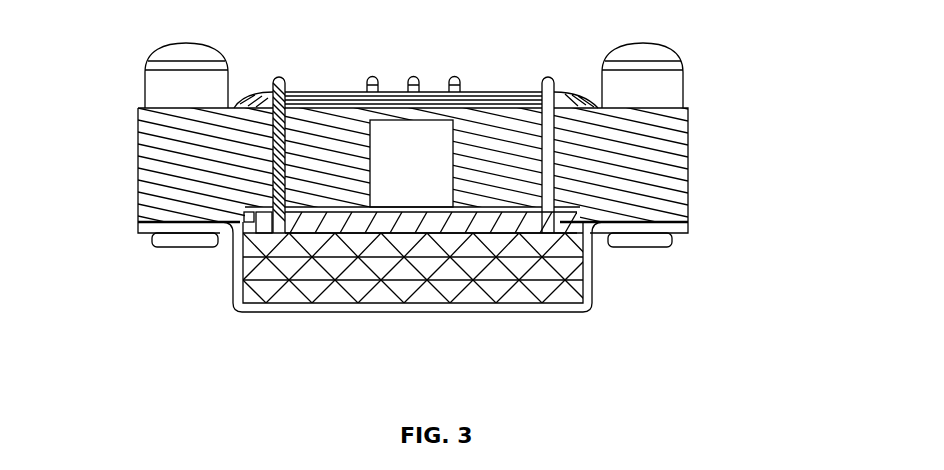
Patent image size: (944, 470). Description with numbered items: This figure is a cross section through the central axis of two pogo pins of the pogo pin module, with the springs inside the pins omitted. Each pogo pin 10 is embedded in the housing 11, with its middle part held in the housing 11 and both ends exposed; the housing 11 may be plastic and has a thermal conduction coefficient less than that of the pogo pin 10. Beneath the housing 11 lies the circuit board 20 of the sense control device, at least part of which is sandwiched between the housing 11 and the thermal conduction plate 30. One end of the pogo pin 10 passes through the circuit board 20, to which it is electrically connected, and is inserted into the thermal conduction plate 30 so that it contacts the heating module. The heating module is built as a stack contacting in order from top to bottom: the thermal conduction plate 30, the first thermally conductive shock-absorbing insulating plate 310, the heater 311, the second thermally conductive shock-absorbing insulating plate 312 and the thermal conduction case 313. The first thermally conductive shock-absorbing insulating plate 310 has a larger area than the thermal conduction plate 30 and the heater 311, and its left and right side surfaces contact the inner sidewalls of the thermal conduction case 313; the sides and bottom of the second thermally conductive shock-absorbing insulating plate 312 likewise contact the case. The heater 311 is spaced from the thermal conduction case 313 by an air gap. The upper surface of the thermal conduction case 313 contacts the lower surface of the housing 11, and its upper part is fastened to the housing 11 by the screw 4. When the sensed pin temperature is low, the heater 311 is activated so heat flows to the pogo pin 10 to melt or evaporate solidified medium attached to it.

The pogo pin 10 is at (287, 98).
The housing 11 is at (640, 172).
The screw 4 is at (676, 241).
The circuit board 20 is at (263, 214).
The thermal conduction plate 30 is at (252, 222).
The first thermally conductive shock-absorbing insulating plate 310 is at (275, 245).
The heater 311 is at (275, 270).
The second thermally conductive shock-absorbing insulating plate 312 is at (283, 291).
The thermal conduction case 313 is at (592, 285).